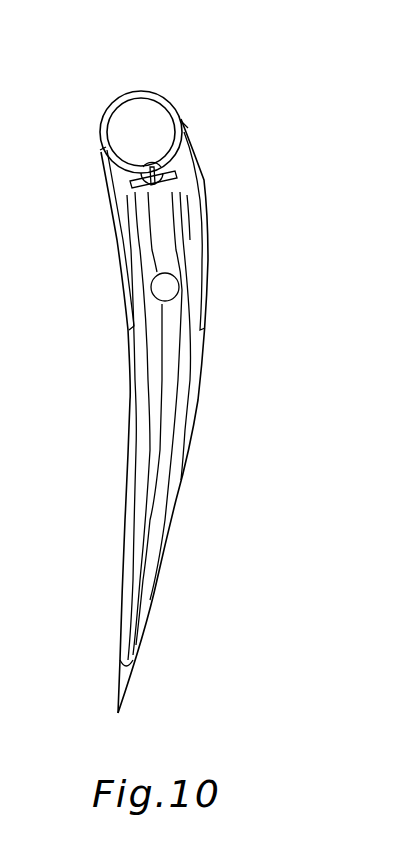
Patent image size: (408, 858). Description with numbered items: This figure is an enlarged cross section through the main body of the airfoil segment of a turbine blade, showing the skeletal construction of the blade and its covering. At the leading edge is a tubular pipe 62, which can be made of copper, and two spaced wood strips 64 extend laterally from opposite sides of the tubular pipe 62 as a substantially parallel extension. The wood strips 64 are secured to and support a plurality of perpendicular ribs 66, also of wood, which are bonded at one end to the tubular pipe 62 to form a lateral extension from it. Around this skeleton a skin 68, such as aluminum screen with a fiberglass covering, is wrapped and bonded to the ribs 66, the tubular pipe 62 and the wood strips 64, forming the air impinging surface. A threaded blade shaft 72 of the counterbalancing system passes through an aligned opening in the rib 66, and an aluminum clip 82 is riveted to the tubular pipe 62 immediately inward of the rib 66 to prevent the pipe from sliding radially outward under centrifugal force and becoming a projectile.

The tubular pipe 62 is at (130, 91).
The wood strips 64 is at (117, 262).
The ribs 66 is at (163, 398).
The skin 68 is at (128, 420).
The blade shaft 72 is at (179, 290).
The aluminum clips 82 is at (173, 181).